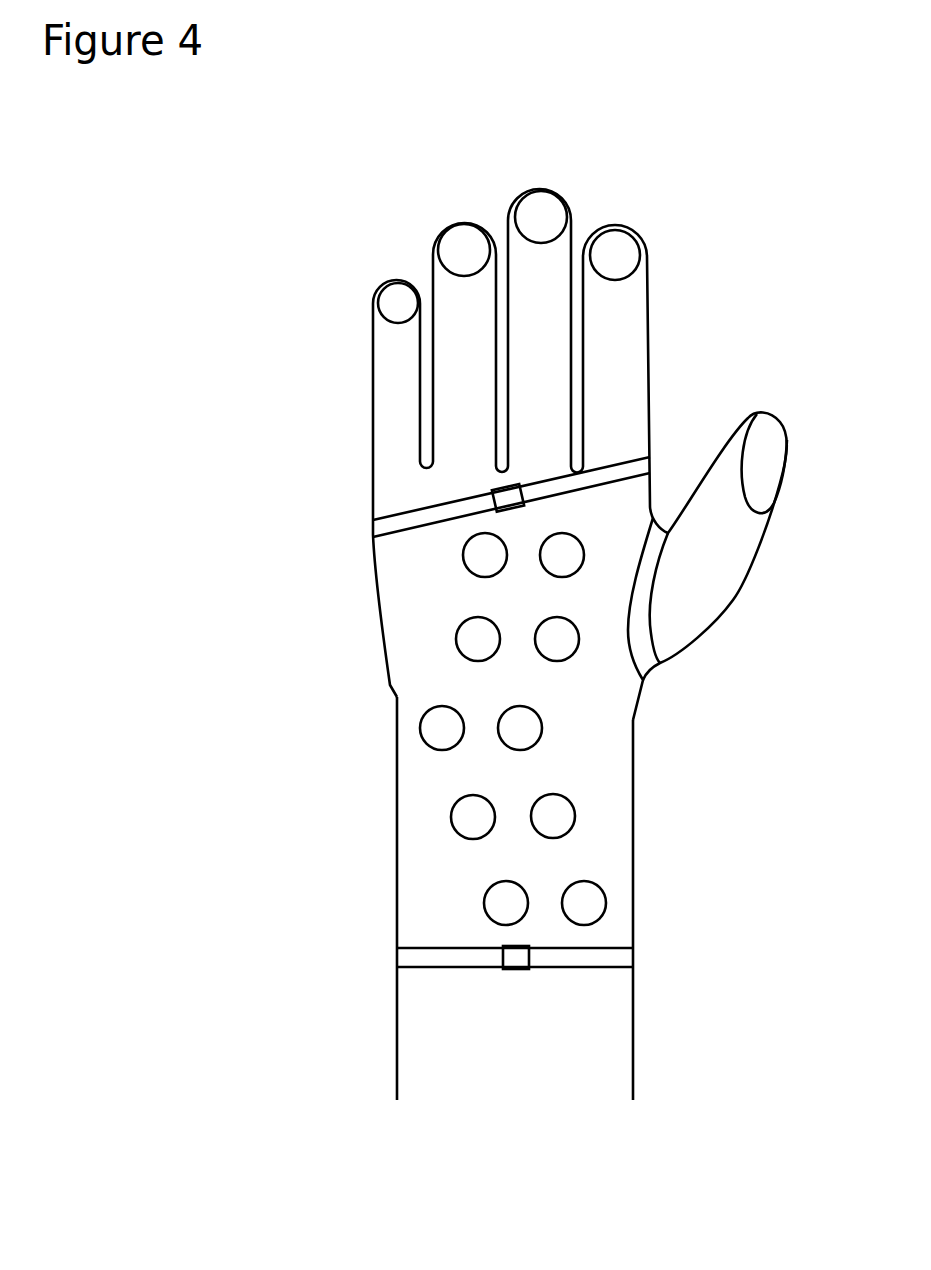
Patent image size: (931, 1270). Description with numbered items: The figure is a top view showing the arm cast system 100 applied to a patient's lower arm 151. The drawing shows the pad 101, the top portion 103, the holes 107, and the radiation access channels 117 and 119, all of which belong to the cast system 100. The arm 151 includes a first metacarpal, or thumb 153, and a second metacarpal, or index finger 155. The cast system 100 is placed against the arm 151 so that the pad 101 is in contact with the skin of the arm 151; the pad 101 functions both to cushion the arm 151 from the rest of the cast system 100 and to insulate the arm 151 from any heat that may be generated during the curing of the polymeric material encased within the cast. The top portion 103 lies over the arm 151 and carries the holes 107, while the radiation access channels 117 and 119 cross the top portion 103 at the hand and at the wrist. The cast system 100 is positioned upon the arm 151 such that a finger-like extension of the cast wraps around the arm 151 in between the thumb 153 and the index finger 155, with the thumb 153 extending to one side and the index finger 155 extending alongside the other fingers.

The arm cast system 100 is at (365, 807).
The pad 101 is at (373, 528).
The top portion 103 is at (417, 670).
The holes 107 is at (575, 815).
The radiation access channel 117 is at (522, 505).
The radiation access channel 119 is at (516, 968).
The lower arm 151 is at (560, 1030).
The thumb 153 is at (728, 540).
The index finger 155 is at (625, 342).